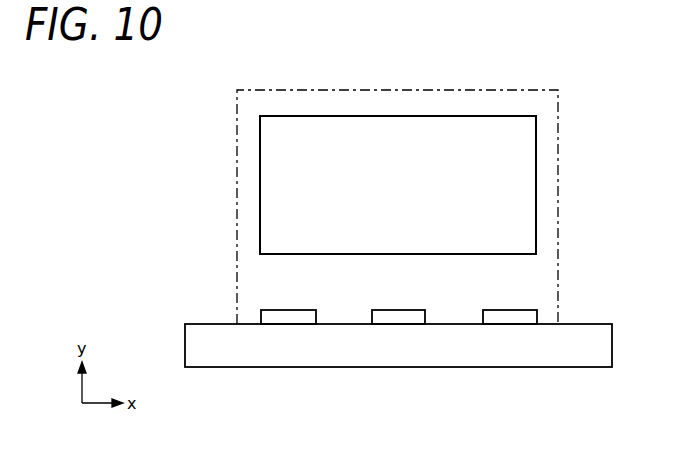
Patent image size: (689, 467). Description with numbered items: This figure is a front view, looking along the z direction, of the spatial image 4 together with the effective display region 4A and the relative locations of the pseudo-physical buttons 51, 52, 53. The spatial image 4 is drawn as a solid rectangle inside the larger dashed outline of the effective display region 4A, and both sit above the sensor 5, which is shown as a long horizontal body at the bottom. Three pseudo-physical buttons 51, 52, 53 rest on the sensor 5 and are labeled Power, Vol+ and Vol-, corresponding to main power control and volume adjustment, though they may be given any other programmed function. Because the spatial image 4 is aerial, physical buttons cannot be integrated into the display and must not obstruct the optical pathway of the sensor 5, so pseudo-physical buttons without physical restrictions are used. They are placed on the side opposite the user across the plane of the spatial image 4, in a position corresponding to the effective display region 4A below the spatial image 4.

The effective display region 4A is at (558, 105).
The spatial image 4 is at (536, 172).
The sensor 5 is at (612, 345).
The pseudo-physical button 51 is at (427, 317).
The pseudo-physical button 52 is at (537, 317).
The pseudo-physical button 53 is at (258, 322).